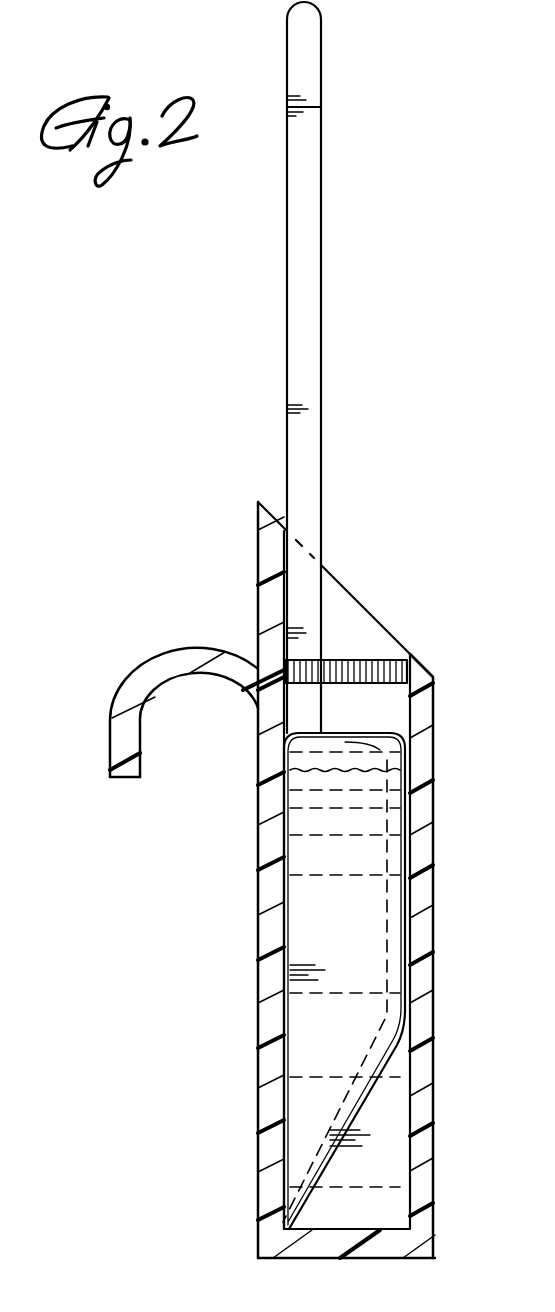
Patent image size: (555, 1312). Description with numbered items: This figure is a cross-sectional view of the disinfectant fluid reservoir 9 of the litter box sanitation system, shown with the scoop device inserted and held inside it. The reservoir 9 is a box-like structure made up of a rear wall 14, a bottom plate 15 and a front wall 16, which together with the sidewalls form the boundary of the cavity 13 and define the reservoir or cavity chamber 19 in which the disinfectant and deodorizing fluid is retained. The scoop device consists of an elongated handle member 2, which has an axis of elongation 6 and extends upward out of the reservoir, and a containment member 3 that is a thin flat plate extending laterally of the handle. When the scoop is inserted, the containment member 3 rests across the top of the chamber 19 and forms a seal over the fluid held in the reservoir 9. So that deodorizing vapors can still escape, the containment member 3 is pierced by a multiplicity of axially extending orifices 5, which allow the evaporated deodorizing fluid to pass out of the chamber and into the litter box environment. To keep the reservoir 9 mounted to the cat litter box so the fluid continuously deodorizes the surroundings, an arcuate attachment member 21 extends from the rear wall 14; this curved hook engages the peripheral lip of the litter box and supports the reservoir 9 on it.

The handle member 2 is at (306, 256).
The containment member 3 is at (396, 658).
The axially extending orifices 5 is at (362, 665).
The axis of elongation 6 is at (393, 858).
The disinfectant fluid reservoir 9 is at (433, 925).
The cavity 13 is at (337, 610).
The rear wall 14 is at (258, 828).
The bottom plate 15 is at (377, 1250).
The front wall 16 is at (433, 1012).
The reservoir or cavity chamber 19 is at (373, 705).
The arcuate attachment member 21 is at (174, 662).